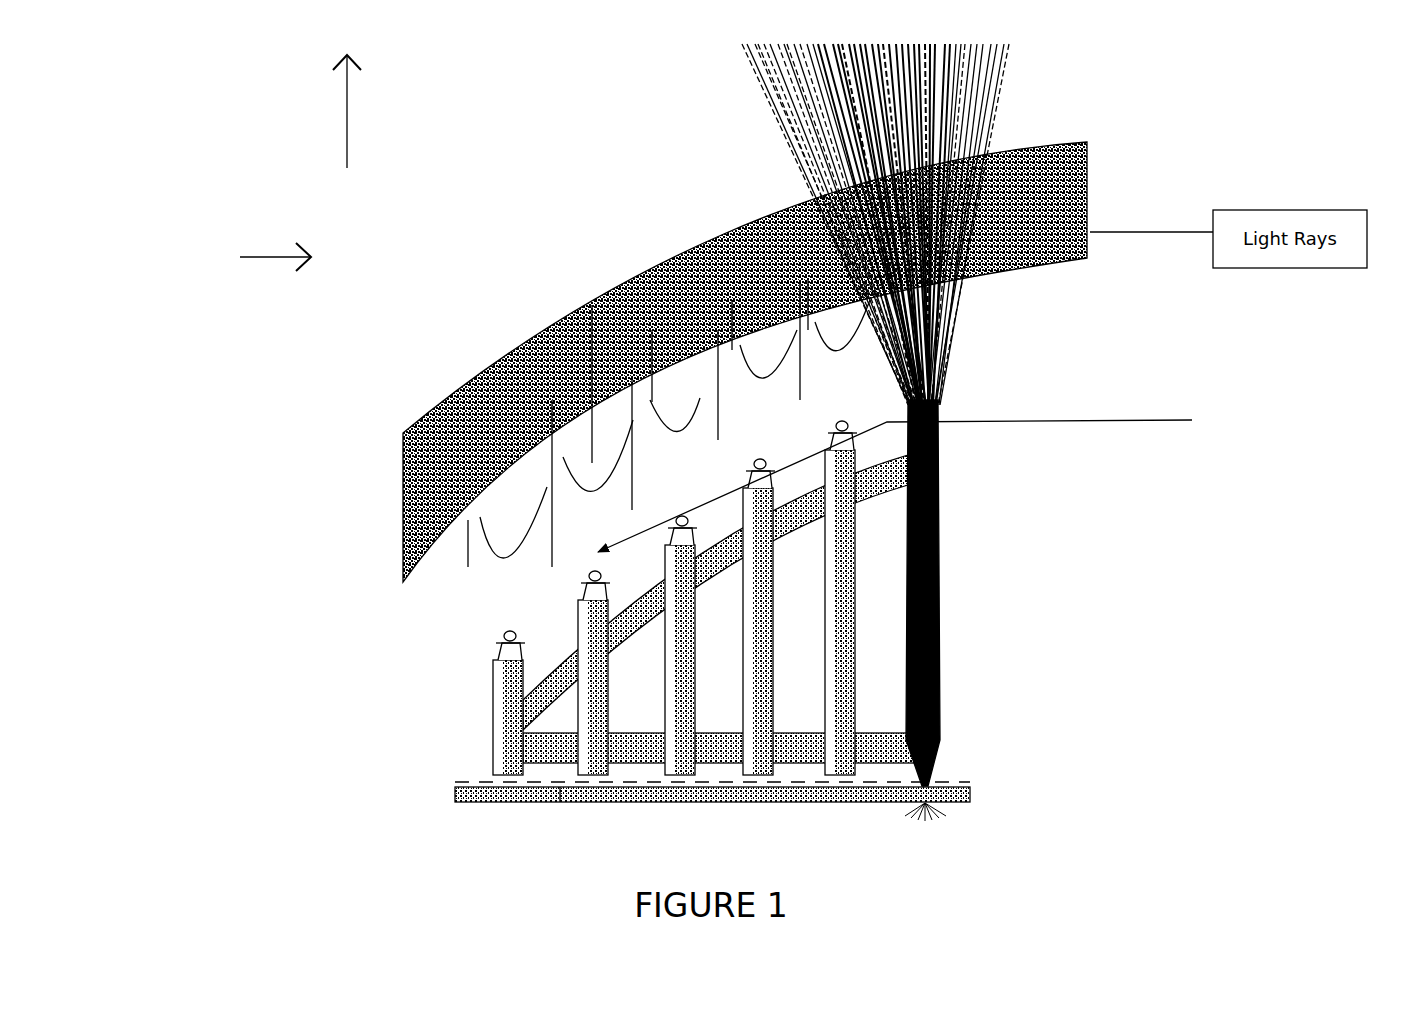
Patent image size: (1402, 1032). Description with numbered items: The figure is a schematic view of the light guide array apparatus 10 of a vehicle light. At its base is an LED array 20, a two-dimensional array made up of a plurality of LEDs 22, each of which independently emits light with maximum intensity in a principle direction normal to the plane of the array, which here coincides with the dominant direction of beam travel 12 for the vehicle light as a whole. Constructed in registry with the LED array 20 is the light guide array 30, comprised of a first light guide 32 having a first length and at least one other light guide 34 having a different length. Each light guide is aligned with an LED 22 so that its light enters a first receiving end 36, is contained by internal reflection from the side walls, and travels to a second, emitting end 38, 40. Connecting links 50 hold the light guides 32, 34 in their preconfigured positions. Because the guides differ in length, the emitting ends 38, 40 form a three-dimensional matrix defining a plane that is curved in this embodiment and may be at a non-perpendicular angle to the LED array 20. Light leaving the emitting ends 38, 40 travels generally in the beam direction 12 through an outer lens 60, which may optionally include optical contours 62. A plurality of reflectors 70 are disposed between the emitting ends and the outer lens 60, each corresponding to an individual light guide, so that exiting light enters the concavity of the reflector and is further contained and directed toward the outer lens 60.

The light guide array apparatus 10 is at (253, 257).
The dominant direction of beam travel 12 is at (352, 129).
The LED array 20 is at (847, 756).
The LED 22 is at (667, 785).
The light guide array 30 is at (663, 598).
The first light guide 32 is at (512, 698).
The other light guide 34 is at (847, 590).
The first receiving end 36 is at (845, 785).
The emitting end 38 is at (855, 443).
The emitting end 40 is at (392, 525).
The connecting links 50 is at (872, 609).
The outer lens 60 is at (830, 332).
The optical contours 62 is at (510, 377).
The reflectors 70 is at (677, 410).